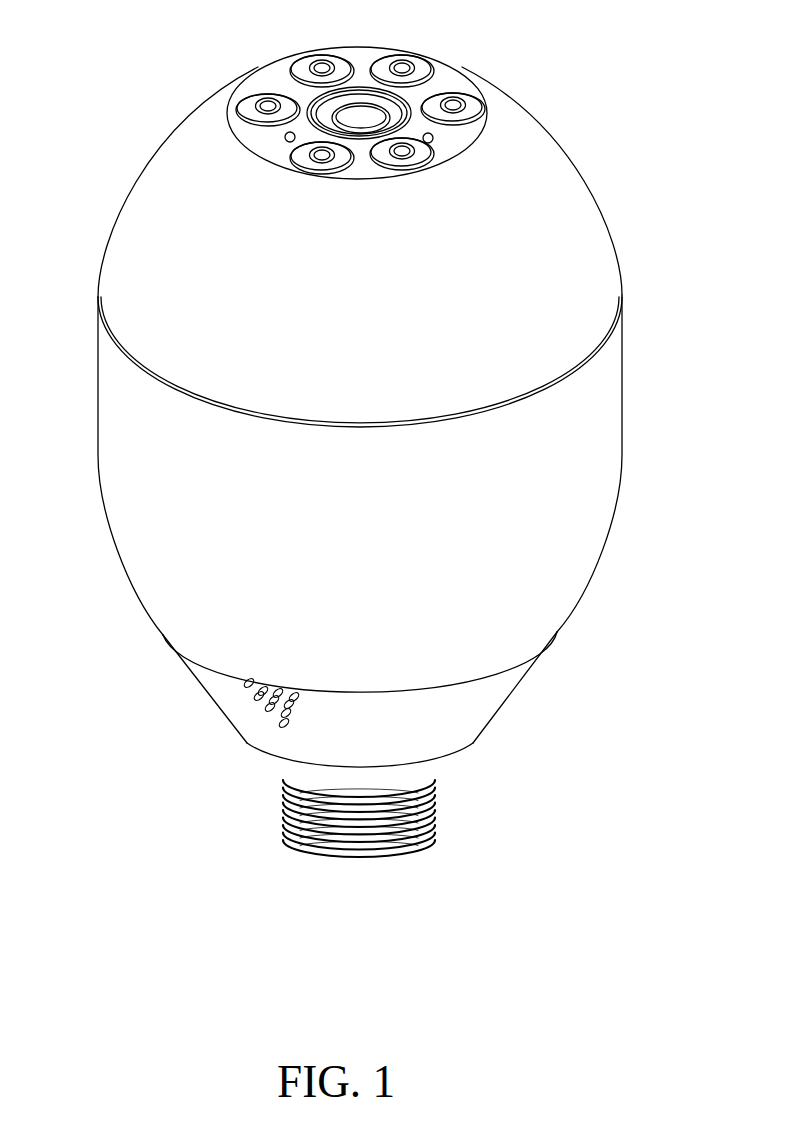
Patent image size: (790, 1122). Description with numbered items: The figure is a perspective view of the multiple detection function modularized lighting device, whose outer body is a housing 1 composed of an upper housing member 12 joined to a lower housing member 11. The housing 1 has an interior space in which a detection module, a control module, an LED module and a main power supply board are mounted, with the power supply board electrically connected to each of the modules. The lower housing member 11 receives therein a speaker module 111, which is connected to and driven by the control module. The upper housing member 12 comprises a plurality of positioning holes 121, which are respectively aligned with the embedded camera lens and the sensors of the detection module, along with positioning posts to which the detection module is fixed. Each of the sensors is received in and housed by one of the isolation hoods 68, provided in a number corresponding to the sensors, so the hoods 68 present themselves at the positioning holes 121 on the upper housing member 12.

The housing 1 is at (610, 549).
The lower housing member 11 is at (478, 738).
The speaker module 111 is at (277, 706).
The upper housing member 12 is at (122, 208).
The positioning holes 121 is at (411, 105).
The isolation hoods 68 is at (303, 69).